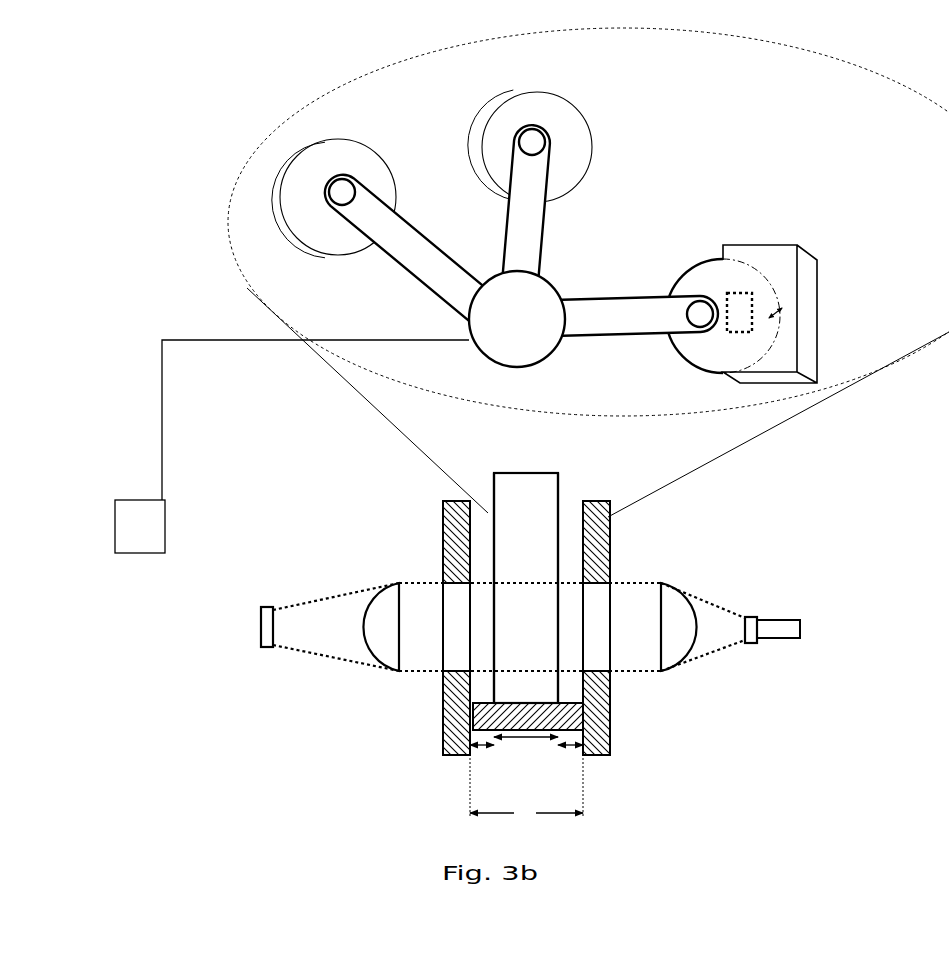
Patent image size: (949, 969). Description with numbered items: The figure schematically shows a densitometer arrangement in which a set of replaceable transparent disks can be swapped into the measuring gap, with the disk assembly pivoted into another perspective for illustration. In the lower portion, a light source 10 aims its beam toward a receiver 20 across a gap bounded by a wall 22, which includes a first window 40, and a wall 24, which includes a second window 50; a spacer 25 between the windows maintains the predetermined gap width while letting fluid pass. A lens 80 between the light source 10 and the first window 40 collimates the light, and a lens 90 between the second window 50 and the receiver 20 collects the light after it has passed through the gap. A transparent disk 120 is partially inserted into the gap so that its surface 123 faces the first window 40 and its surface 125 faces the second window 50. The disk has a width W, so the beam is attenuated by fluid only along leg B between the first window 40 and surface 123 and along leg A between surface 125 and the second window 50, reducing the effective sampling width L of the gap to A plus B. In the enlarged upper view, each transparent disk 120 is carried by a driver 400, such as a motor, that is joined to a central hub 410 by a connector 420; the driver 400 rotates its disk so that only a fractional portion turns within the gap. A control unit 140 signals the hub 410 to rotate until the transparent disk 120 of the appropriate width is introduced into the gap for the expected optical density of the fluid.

The light source 10 is at (786, 646).
The receiver 20 is at (260, 627).
The wall 22 is at (600, 755).
The wall 24 is at (443, 752).
The spacer 25 is at (578, 711).
The first window 40 is at (745, 305).
The second window 50 is at (446, 656).
The lens 80 is at (722, 655).
The lens 90 is at (383, 592).
The transparent disk 120 is at (360, 157).
The surface 123 is at (563, 485).
The surface 125 is at (492, 485).
The control unit 140 is at (130, 508).
The driver 400 is at (549, 141).
The central hub 410 is at (557, 349).
The connector 420 is at (428, 288).
The width of transparent disk W is at (784, 313).
The leg A is at (490, 750).
The leg B is at (560, 750).
The effective sampling width L is at (526, 812).